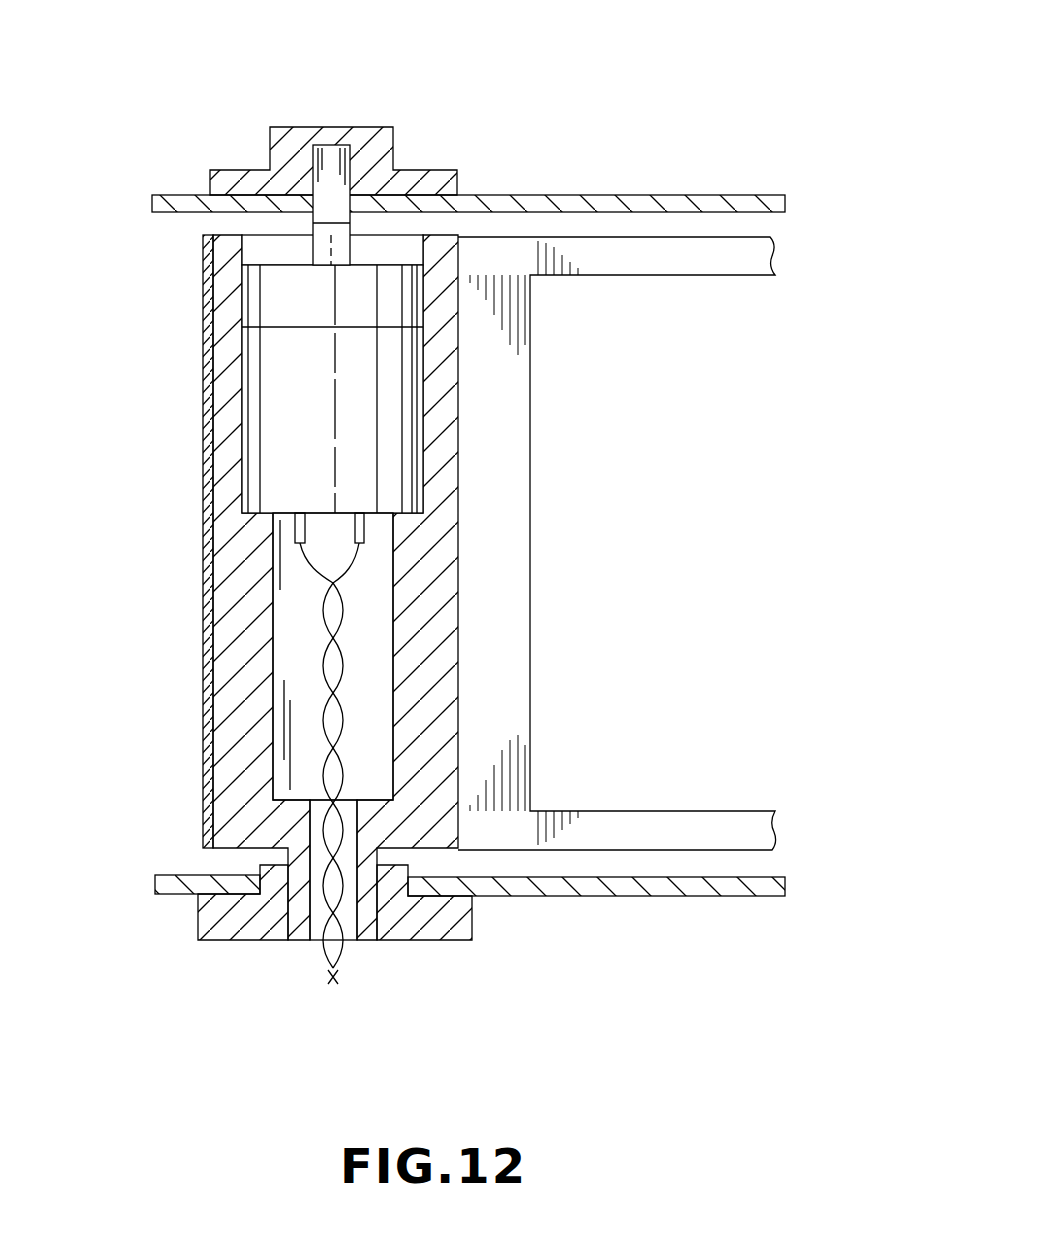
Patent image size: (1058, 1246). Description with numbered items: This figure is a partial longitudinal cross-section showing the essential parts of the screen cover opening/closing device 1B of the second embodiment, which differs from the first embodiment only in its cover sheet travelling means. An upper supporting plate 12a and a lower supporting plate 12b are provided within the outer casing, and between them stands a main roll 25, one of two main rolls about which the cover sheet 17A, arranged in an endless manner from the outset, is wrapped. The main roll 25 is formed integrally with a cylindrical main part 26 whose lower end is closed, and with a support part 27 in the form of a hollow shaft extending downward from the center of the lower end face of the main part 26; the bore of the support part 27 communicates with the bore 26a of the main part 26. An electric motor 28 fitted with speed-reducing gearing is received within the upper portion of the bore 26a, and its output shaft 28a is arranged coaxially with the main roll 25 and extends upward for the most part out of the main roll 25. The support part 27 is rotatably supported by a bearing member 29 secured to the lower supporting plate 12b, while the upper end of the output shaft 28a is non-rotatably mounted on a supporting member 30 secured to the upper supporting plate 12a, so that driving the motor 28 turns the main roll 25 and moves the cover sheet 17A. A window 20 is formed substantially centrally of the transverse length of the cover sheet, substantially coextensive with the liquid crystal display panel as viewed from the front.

The screen cover opening/closing device 1B is at (688, 122).
The upper supporting plate 12a is at (616, 200).
The lower supporting plate 12b is at (654, 890).
The cover sheet 17A is at (481, 252).
The window 20 is at (696, 286).
The main roll 25 is at (458, 550).
The cylindrical main part 26 is at (443, 618).
The bore 26a is at (393, 668).
The support part 27 is at (369, 894).
The electric motor 28 is at (387, 440).
The output shaft 28a is at (350, 140).
The bearing member 29 is at (241, 928).
The supporting member 30 is at (307, 127).